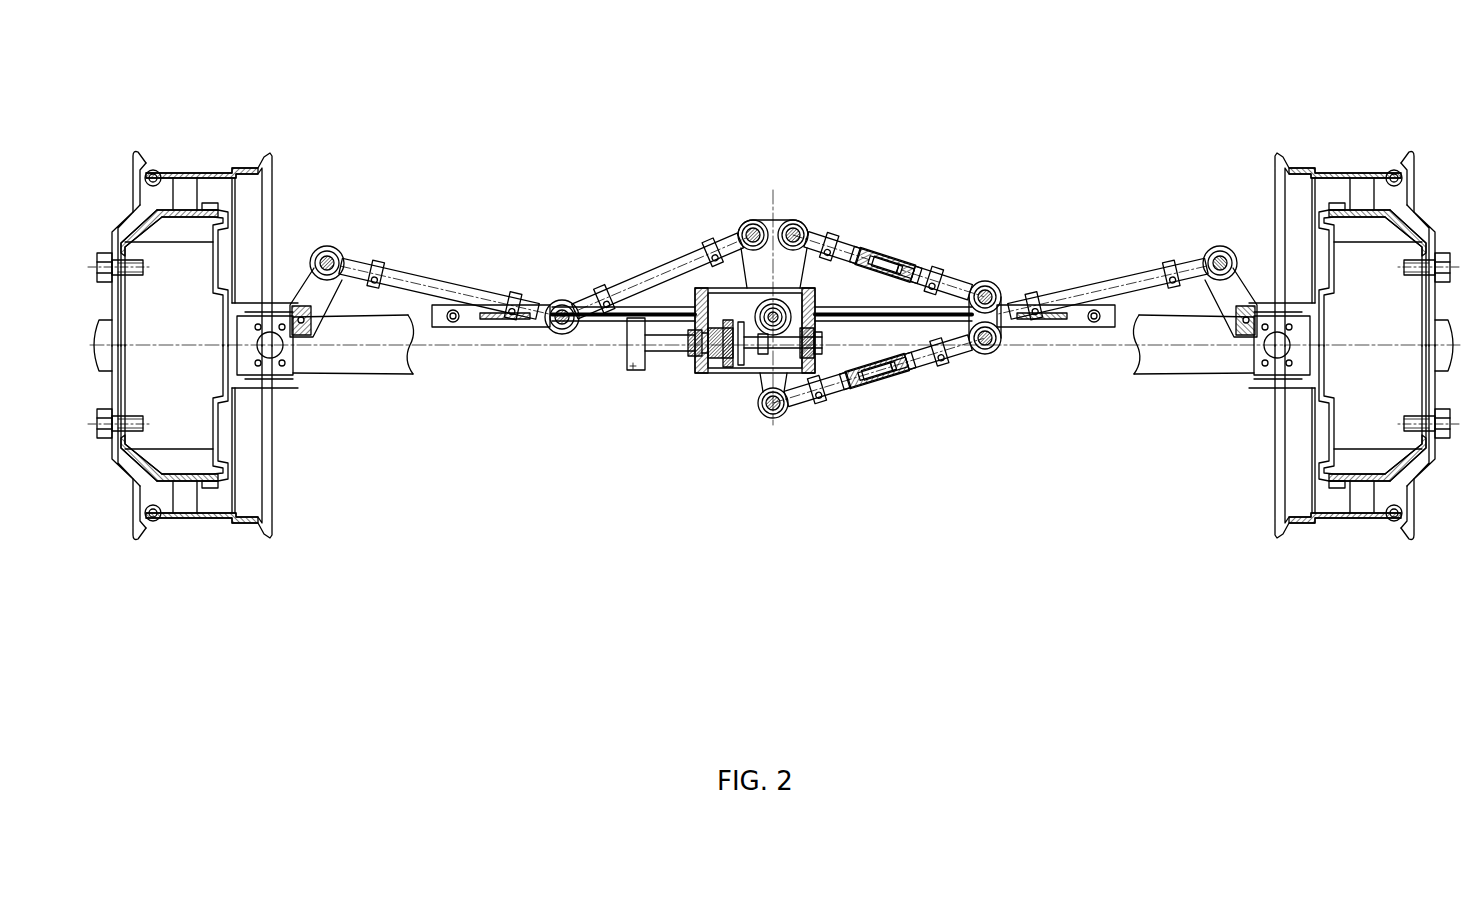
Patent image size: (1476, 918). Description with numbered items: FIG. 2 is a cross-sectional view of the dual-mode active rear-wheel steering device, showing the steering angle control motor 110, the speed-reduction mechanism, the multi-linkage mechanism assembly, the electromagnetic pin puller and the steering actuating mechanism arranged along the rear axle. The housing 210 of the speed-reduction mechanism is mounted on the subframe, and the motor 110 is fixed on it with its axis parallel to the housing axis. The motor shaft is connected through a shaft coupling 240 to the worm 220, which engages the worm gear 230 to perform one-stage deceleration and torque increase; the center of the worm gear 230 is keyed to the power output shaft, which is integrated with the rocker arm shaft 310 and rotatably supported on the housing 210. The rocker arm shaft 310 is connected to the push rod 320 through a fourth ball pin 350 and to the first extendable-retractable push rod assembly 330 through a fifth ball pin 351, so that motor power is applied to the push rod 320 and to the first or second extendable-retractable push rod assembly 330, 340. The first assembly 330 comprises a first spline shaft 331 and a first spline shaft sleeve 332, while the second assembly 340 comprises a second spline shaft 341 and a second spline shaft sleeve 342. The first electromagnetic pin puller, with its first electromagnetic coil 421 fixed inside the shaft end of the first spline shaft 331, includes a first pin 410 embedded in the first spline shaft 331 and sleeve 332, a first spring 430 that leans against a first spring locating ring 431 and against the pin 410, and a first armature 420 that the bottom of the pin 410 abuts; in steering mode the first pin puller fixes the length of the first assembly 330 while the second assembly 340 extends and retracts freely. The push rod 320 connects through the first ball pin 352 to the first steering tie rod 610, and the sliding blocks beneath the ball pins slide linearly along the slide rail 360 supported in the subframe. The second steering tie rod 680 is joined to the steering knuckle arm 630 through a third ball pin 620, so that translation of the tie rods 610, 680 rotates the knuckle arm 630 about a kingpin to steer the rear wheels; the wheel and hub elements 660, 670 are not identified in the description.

The steering angle control motor 110 is at (660, 342).
The housing 210 is at (758, 374).
The worm 220 is at (760, 350).
The worm gear 230 is at (747, 350).
The shaft coupling 240 is at (720, 347).
The rocker arm shaft 310 is at (772, 262).
The push rod 320 is at (640, 287).
The first extendable-retractable push rod assembly 330 is at (850, 250).
The first spline shaft 331 is at (967, 278).
The first spline shaft sleeve 332 is at (995, 300).
The second extendable-retractable push rod assembly 340 is at (805, 395).
The second spline shaft 341 is at (905, 365).
The second spline shaft sleeve 342 is at (961, 348).
The fourth ball pin 350 is at (743, 220).
The fifth ball pin 351 is at (790, 240).
The first ball pin 352 is at (555, 300).
The slide rail 360 is at (1100, 283).
The first pin 410 is at (875, 250).
The first armature 420 is at (877, 251).
The first electromagnetic coil 421 is at (883, 257).
The first spring 430 is at (879, 253).
The first spring locating ring 431 is at (881, 255).
The first steering tie rod 610 is at (383, 267).
The third ball pin 620 is at (325, 248).
The steering knuckle arm 630 is at (300, 300).
The wheel hub assembly 660 is at (168, 168).
The ball joint 670 is at (1223, 265).
The second steering tie rod 680 is at (1075, 323).